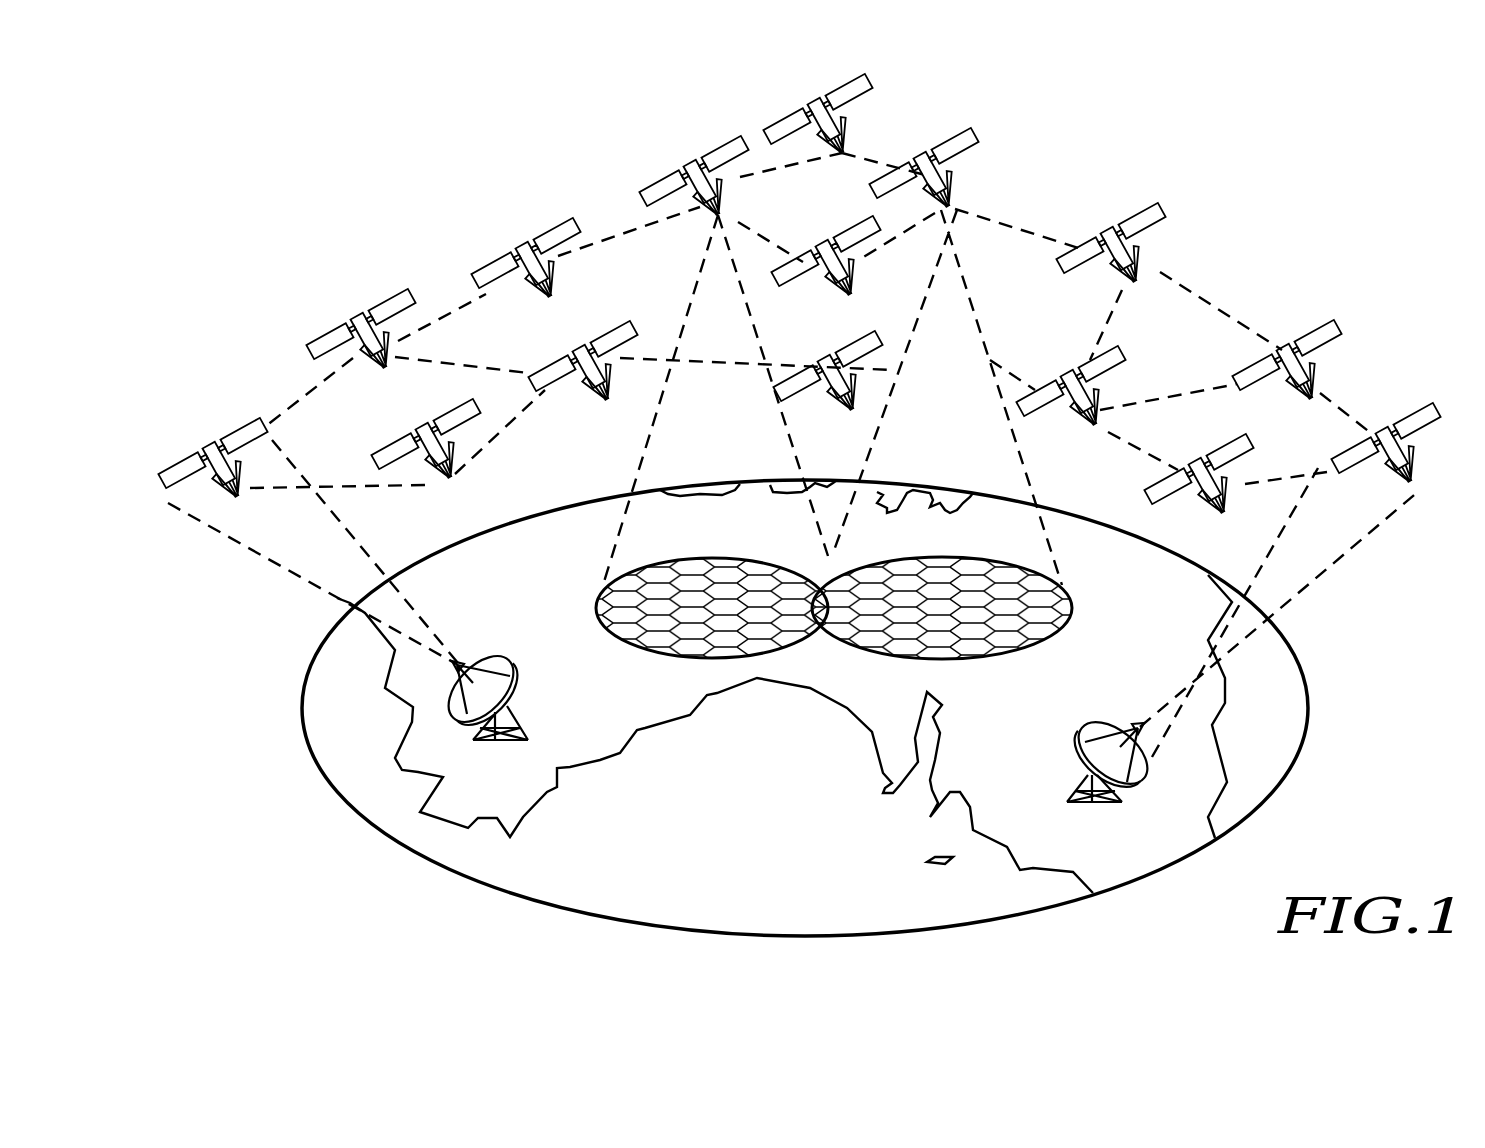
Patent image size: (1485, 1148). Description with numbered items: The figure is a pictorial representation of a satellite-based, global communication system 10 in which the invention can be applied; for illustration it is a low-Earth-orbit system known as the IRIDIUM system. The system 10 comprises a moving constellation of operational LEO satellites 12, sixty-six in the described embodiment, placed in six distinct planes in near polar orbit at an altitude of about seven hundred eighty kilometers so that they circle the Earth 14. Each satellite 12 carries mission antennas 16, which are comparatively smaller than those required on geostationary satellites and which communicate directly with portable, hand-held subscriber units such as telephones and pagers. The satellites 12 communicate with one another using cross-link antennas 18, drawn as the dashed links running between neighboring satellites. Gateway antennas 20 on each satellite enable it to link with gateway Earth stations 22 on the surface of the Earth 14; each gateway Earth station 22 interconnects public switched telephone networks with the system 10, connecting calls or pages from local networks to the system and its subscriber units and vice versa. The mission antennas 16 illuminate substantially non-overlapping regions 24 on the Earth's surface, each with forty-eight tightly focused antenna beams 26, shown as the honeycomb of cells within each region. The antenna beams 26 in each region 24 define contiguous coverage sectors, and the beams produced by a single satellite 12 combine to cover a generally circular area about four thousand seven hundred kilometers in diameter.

The satellite-based global communication system 10 is at (1288, 254).
The LEO satellites 12 is at (661, 181).
The Earth 14 is at (1306, 681).
The mission antennas 16 is at (698, 208).
The cross-link antennas 18 is at (724, 214).
The gateway antennas 20 is at (719, 226).
The gateway Earth stations 22 is at (456, 708).
The substantially non-overlapping regions 24 is at (632, 645).
The antenna beams 26 is at (834, 608).